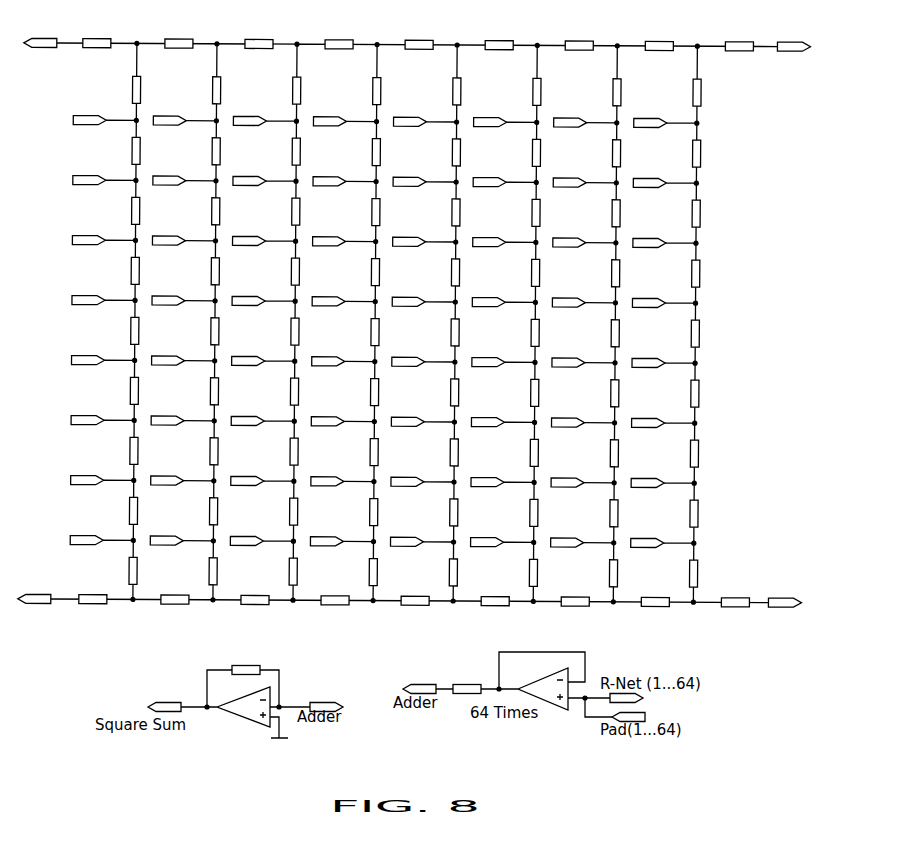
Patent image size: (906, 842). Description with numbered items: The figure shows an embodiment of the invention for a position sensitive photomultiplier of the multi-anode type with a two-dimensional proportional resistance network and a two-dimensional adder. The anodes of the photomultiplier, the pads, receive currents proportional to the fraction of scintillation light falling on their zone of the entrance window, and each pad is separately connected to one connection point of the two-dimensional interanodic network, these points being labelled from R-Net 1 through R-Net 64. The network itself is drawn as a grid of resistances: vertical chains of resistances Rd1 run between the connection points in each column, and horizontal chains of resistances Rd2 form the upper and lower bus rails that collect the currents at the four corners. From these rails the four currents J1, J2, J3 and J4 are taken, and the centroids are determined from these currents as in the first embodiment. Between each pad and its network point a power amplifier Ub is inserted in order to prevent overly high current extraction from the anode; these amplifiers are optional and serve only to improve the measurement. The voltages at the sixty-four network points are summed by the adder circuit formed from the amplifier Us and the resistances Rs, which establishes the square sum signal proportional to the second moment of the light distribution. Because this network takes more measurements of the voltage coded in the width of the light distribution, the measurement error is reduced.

The divider resistor Rd1 is at (432, 331).
The bus resistor Rd2 is at (416, 333).
The current J1 is at (34, 608).
The current J2 is at (784, 612).
The current J3 is at (793, 57).
The current J4 is at (40, 53).
The Rs resistance Rs is at (356, 671).
The Us amplifier Us is at (245, 704).
The Ub power amplifier Ub is at (524, 684).
The R-Net connection point R-Net 1 is at (104, 129).
The R-Net connection point R-Net 64 is at (659, 551).